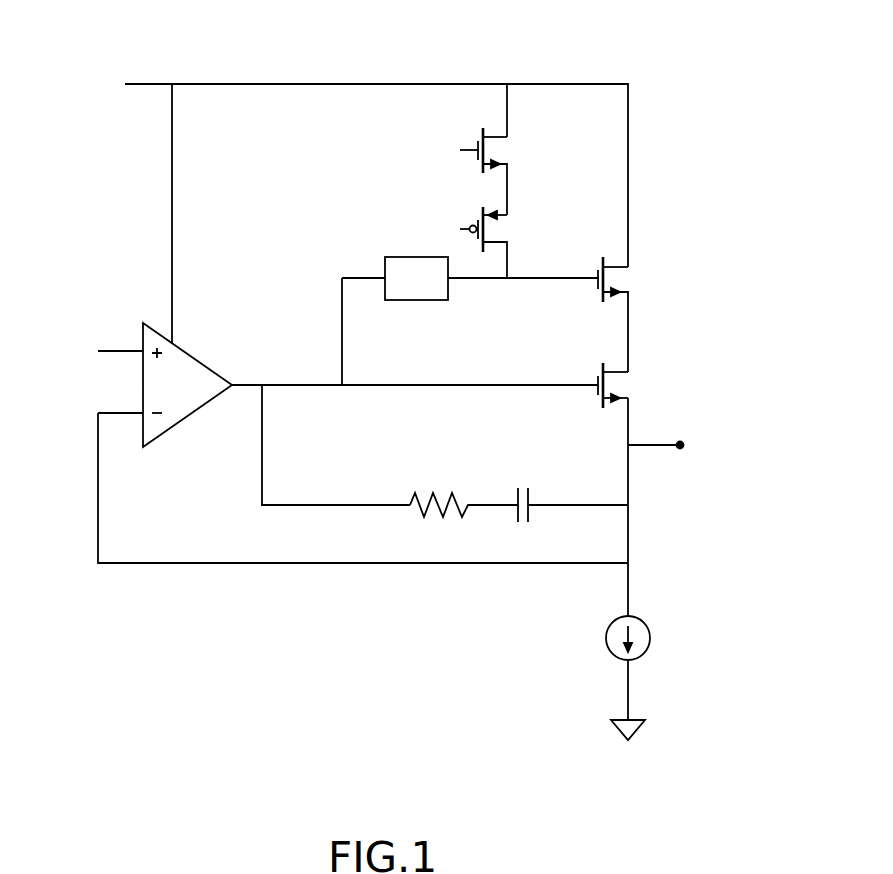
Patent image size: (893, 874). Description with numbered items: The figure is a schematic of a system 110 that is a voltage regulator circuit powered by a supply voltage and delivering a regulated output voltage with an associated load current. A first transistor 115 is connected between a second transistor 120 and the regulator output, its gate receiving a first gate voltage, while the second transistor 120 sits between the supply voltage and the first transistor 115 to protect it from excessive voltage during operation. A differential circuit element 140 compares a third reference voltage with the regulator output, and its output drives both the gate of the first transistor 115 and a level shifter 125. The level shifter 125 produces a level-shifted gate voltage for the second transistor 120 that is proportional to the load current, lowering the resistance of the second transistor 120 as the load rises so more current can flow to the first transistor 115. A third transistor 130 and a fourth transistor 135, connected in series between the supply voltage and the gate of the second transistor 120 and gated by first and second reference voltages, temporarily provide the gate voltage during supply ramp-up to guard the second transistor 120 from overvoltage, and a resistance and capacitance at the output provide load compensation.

The system 110 is at (678, 68).
The first transistor 115 is at (633, 381).
The second transistor 120 is at (633, 275).
The level shifter 125 is at (385, 262).
The third transistor 130 is at (507, 228).
The fourth transistor 135 is at (512, 147).
The differential circuit element 140 is at (198, 360).